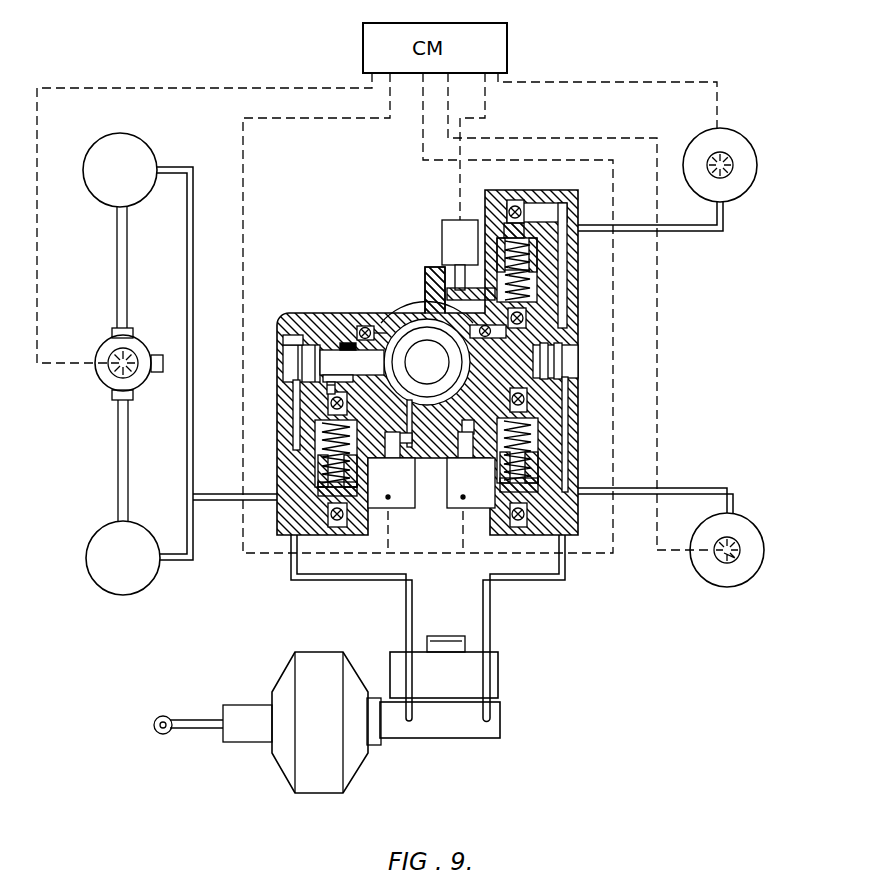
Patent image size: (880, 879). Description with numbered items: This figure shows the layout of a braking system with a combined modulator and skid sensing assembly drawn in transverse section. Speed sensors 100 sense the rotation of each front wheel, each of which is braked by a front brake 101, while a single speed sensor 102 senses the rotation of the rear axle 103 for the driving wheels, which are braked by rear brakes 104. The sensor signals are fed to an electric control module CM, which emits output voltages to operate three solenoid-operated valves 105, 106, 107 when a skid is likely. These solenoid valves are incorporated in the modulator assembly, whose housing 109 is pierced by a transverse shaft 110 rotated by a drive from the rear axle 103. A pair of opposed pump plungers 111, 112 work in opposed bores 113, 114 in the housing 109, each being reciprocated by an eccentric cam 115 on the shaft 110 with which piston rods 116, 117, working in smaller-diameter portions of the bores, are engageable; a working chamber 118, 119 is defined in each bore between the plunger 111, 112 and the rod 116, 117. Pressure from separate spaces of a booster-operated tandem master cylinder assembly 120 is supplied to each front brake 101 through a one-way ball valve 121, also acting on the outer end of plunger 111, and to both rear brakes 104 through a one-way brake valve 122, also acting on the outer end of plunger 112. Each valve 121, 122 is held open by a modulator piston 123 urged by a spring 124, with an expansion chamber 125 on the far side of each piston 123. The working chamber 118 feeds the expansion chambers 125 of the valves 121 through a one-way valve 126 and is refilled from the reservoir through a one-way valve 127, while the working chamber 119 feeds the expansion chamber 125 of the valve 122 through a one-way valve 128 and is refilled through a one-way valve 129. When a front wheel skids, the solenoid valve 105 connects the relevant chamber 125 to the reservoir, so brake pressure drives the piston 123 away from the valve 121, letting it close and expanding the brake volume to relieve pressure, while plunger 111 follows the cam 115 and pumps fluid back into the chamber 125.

The speed sensor 100 is at (733, 160).
The front wheel brake 101 is at (748, 176).
The speed sensor 102 is at (115, 378).
The rear axle 103 is at (122, 283).
The rear brake 104 is at (145, 152).
The solenoid-operated valve 105 is at (445, 228).
The solenoid-operated valve 106 is at (447, 492).
The solenoid-operated valve 107 is at (412, 492).
The housing 109 is at (366, 326).
The transverse shaft 110 is at (320, 352).
The pump plunger 111 is at (565, 350).
The pump plunger 112 is at (284, 322).
The bore 113 is at (492, 331).
The bore 114 is at (280, 332).
The eccentric cam 115 is at (434, 333).
The piston rod 116 is at (482, 362).
The piston rod 117 is at (300, 338).
The working chamber 118 is at (533, 292).
The working chamber 119 is at (292, 380).
The booster-operated tandem master cylinder assembly 120 is at (408, 735).
The one-way ball valve 121 is at (521, 201).
The one-way brake valve 122 is at (330, 515).
The modulator piston 123 is at (509, 205).
The spring 124 is at (536, 243).
The expansion chamber 125 is at (532, 262).
The one-way valve 126 is at (452, 278).
The one-way valve 127 is at (428, 290).
The one-way valve 128 is at (331, 402).
The one-way valve 129 is at (350, 342).